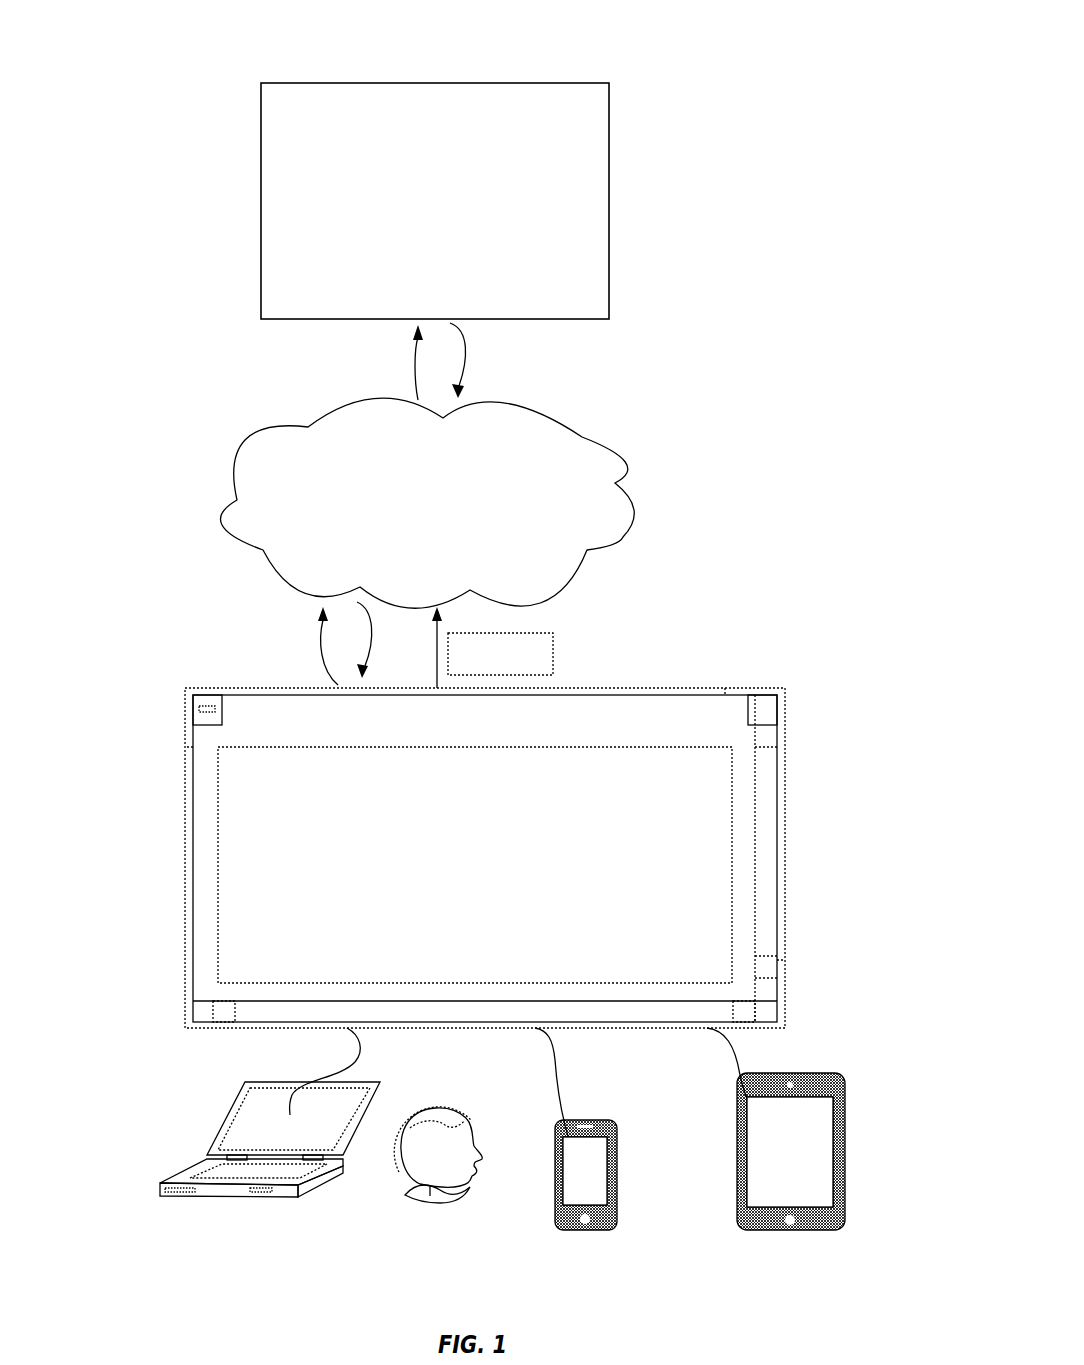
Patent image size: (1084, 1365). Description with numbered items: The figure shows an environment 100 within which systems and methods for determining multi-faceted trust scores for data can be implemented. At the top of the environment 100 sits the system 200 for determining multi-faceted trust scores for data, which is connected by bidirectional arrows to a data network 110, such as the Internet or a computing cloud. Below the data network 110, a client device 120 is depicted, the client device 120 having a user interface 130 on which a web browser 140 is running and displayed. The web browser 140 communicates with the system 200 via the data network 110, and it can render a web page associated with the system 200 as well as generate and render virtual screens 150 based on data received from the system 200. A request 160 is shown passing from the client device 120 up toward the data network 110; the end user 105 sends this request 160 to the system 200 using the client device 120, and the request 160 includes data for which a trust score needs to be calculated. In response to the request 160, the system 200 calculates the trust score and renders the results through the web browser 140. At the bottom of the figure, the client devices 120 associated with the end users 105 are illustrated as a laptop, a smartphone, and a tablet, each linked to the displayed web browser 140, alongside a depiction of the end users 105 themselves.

The environment 100 is at (875, 0).
The end user 105 is at (458, 1088).
The data network 110 is at (603, 518).
The client device 120 is at (320, 1177).
The user interface 130 is at (185, 712).
The web browser 140 is at (290, 700).
The virtual screens 150 is at (273, 778).
The request 160 is at (553, 633).
The system for determining multi-faceted trust scores for data 200 is at (432, 83).